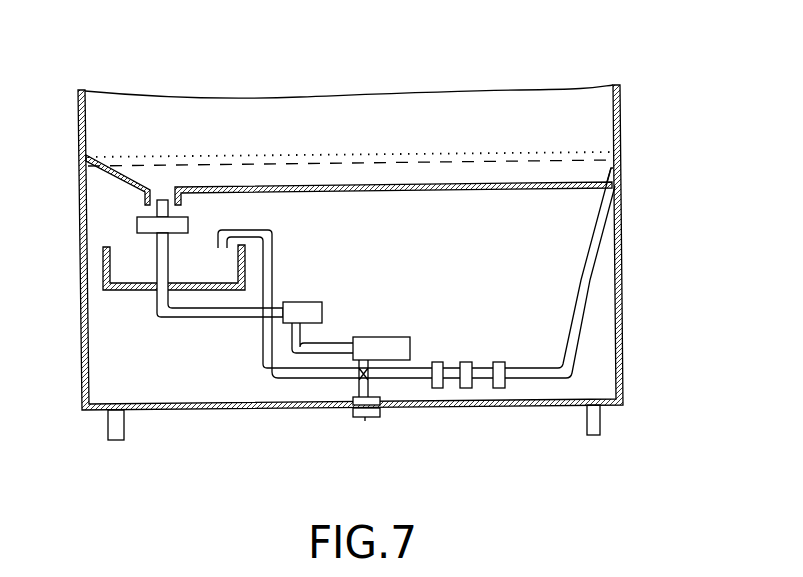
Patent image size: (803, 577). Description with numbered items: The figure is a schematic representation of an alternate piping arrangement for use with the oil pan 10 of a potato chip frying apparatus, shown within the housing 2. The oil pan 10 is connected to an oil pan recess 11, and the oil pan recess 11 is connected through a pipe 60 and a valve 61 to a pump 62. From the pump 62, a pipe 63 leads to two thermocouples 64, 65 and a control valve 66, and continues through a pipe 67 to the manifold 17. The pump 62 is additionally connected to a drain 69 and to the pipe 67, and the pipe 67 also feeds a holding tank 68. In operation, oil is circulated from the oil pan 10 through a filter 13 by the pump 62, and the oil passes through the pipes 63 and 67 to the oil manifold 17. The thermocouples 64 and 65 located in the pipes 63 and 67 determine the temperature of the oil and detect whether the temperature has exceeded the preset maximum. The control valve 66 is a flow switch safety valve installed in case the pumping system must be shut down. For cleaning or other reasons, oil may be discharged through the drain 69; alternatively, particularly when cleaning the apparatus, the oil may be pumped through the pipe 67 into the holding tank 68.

The housing 2 is at (80, 353).
The oil pan 10 is at (232, 168).
The oil pan recess 11 is at (148, 198).
The filter 13 is at (137, 222).
The manifold 17 is at (609, 178).
The pipe 60 is at (176, 318).
The valve 61 is at (305, 305).
The pump 62 is at (380, 337).
The pipe 63 is at (397, 377).
The thermocouple 64 is at (438, 389).
The thermocouple 65 is at (466, 362).
The control valve 66 is at (499, 389).
The pipe 67 is at (272, 260).
The holding tank 68 is at (142, 278).
The drain 69 is at (360, 418).